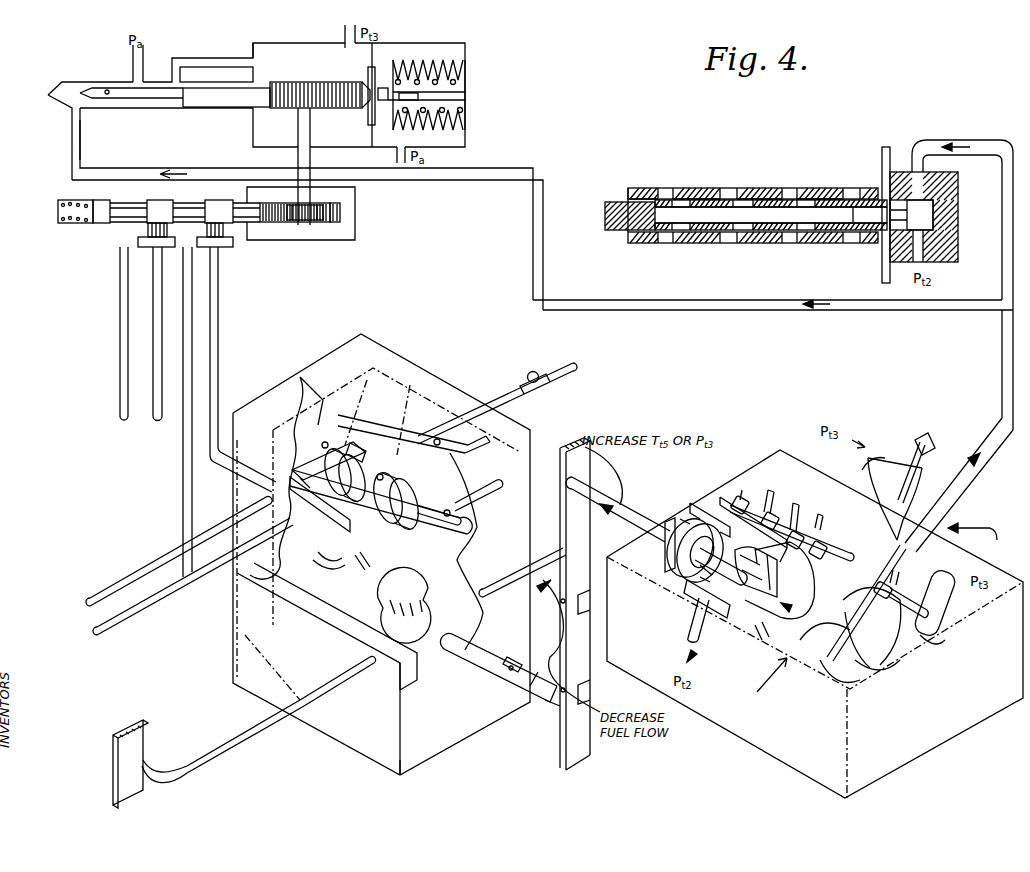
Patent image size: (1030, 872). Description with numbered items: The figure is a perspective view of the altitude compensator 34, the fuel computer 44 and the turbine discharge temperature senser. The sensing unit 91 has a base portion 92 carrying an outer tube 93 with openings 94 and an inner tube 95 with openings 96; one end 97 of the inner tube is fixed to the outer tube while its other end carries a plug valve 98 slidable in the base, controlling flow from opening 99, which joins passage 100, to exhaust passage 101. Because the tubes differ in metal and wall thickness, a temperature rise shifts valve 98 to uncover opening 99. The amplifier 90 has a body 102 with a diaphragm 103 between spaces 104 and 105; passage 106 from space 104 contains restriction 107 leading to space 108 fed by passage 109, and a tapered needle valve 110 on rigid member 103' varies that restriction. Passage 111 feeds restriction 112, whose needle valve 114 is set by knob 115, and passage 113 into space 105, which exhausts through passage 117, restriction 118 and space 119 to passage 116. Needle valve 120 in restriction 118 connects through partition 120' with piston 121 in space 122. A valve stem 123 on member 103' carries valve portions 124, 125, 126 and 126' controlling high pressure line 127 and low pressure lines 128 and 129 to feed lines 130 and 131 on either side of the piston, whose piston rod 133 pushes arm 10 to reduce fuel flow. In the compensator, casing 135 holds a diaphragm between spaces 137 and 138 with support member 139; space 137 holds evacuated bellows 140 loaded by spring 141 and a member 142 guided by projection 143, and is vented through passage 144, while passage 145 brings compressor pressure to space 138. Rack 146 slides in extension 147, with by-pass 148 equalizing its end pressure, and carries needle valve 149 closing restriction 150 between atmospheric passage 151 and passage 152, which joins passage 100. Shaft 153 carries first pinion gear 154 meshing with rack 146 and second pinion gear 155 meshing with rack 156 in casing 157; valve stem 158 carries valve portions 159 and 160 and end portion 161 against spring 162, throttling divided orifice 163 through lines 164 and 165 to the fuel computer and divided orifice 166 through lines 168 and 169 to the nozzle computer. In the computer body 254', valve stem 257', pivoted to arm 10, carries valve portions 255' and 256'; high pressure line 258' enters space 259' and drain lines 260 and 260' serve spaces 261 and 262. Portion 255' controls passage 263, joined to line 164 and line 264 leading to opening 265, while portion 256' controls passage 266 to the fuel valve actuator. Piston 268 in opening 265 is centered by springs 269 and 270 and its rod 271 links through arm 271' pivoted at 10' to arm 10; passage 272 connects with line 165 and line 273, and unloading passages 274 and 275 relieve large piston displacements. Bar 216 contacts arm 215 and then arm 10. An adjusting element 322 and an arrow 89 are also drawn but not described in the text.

The servo valve 34 is at (46, 121).
The restriction 150 is at (106, 89).
The passage 151 is at (143, 62).
The by-pass 148 is at (207, 67).
The space 138 is at (275, 52).
The passage 145 is at (343, 32).
The first pinion gear 154 is at (296, 82).
The rack 146 is at (344, 82).
The rack 156 is at (380, 48).
The casing 135 is at (445, 43).
The evacuated bellows 140 is at (465, 54).
The spring 141 is at (456, 81).
The projection 143 is at (463, 101).
The space 137 is at (456, 134).
The member 142 is at (374, 112).
The rigid support member 139 is at (366, 116).
The passage 144 is at (395, 155).
The needle valve 149 is at (133, 99).
The extension 147 is at (207, 107).
The shaft 153 is at (298, 131).
The passage 152 is at (80, 144).
The end portion 161 is at (110, 190).
The valve portion 160 is at (165, 205).
The valve portion 159 is at (226, 205).
The spring 162 is at (58, 207).
The divided orifice 166 is at (148, 229).
The divided orifice 163 is at (225, 230).
The valve stem 158 is at (270, 223).
The second pinion gear 155 is at (318, 226).
The casing 157 is at (355, 229).
The line 165 is at (186, 305).
The line 164 is at (218, 335).
The line 168 is at (155, 342).
The line 169 is at (120, 371).
The passage 266 is at (126, 584).
The space 262 is at (310, 468).
The passage 263 is at (325, 500).
The line 264 is at (345, 530).
The opening 265 is at (315, 574).
The valve portion 255' is at (344, 461).
The drain line 260' is at (414, 408).
The high pressure fluid line 258' is at (428, 452).
The valve portion 256' is at (416, 467).
The space 259' is at (368, 447).
The drain line 260 is at (487, 483).
The space 261 is at (462, 519).
The valve stem 257' is at (405, 507).
The spring 269 is at (364, 560).
The piston 268 is at (408, 572).
The bar 216 is at (188, 768).
The spring 270 is at (470, 622).
The rod 271 is at (492, 673).
The arm 271' is at (533, 704).
The pivot connection 10' is at (540, 727).
The arm 10 is at (560, 605).
The line 273 is at (130, 613).
The passage 272 is at (240, 625).
The unloading passage 274 is at (270, 620).
The unloading passage 275 is at (310, 650).
The arm 215 is at (113, 782).
The fuel flow computer 44 is at (377, 774).
The computer body 254' is at (435, 778).
The adjusting rod 322 is at (540, 395).
The piston rod 133 is at (622, 500).
The space 122 is at (668, 522).
The line 130 is at (698, 512).
The valve portion 126' is at (722, 480).
The low pressure fluid line 128 is at (740, 492).
The valve portion 126 is at (756, 489).
The high pressure fluid line 127 is at (778, 497).
The valve portion 125 is at (800, 508).
The low pressure fluid line 129 is at (822, 514).
The valve portion 124 is at (822, 540).
The line 131 is at (795, 545).
The valve stem 123 is at (850, 560).
The needle valve 120 is at (775, 580).
The piston 121 is at (672, 560).
The partition 120' is at (674, 587).
The space 119 is at (700, 598).
The passage 116 is at (697, 630).
The restriction 118 is at (740, 610).
The passage 117 is at (762, 642).
The space 105 is at (810, 650).
The amplifier 90 is at (761, 681).
The diaphragm 103 is at (831, 684).
The space 104 is at (870, 668).
The body 102 is at (797, 758).
The passage 111 is at (872, 458).
The needle valve 114 is at (910, 465).
The knob 115 is at (932, 438).
The restriction 112 is at (898, 470).
The passage 113 is at (905, 512).
The sensing unit 89 is at (983, 535).
The passage 106 is at (892, 582).
The tapered needle valve 110 is at (900, 578).
The passage 109 is at (950, 598).
The space 108 is at (930, 614).
The restriction 107 is at (937, 645).
The rigid member 103' is at (880, 639).
The passage 100 is at (992, 147).
The openings 94 is at (668, 188).
The outer tube 93 is at (706, 188).
The temperature sensing unit 91 is at (770, 179).
The inner tube 95 is at (708, 231).
The openings 96 is at (748, 231).
The base portion 92 is at (882, 258).
The plug valve 98 is at (933, 210).
The opening 99 is at (920, 218).
The exhaust passage 101 is at (918, 268).
The end 97 is at (615, 232).